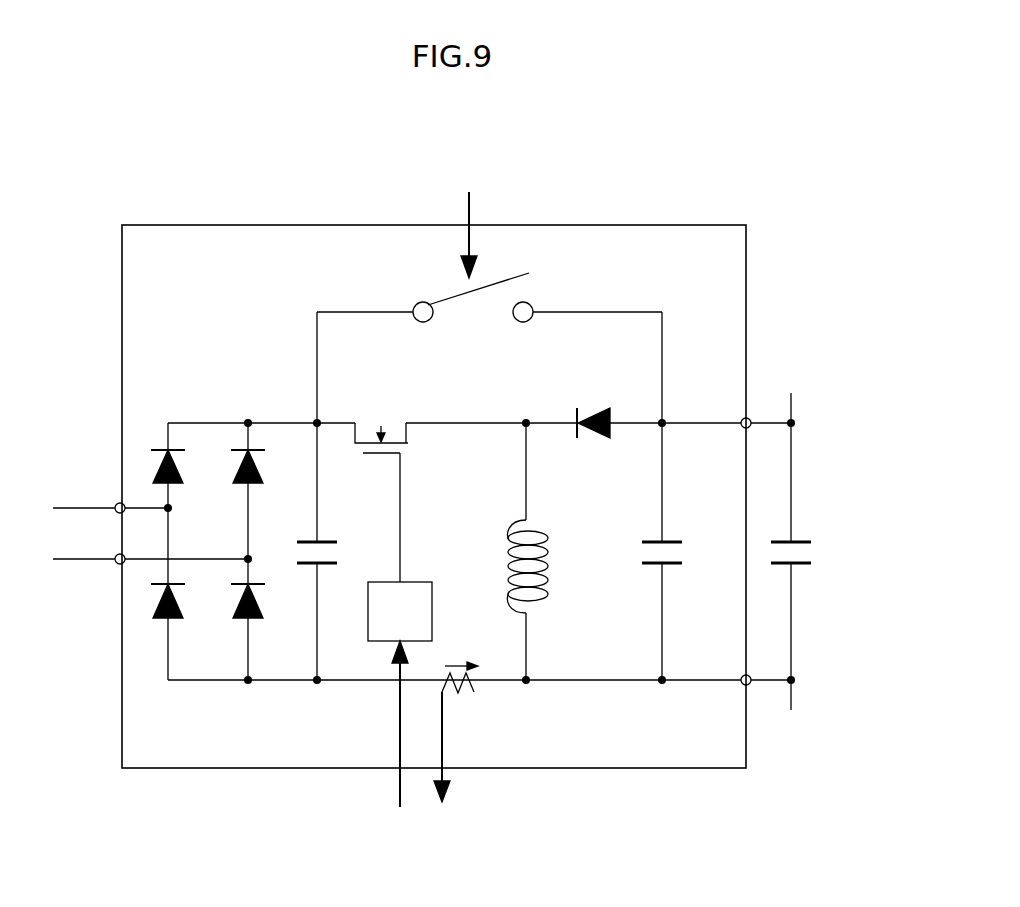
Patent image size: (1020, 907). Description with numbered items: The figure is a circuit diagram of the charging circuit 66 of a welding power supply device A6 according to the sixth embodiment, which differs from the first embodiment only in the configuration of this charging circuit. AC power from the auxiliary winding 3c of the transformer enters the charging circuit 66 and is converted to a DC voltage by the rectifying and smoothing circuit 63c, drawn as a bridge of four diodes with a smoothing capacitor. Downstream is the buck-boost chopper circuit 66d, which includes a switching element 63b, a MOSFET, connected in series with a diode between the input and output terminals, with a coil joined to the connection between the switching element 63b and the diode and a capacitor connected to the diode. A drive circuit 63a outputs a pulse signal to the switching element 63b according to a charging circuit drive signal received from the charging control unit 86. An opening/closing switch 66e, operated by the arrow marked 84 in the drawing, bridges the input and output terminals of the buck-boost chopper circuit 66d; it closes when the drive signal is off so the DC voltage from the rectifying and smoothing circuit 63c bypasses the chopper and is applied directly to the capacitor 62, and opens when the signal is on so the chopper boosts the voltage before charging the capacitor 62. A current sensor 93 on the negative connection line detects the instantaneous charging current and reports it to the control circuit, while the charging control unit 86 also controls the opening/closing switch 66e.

The welding power supply device A6 is at (472, 414).
The charging circuit 66 is at (463, 474).
The opening/closing switch 66e is at (517, 265).
The switch operation signal 84 is at (468, 224).
The rectifying and smoothing circuit 63c is at (230, 363).
The switching element 63b is at (393, 410).
The drive circuit 63a is at (432, 580).
The buck-boost chopper circuit 66d is at (527, 400).
The auxiliary winding 3c is at (133, 533).
The current sensor 93 is at (453, 652).
The capacitor 62 is at (823, 557).
The charging control unit 86 is at (421, 738).